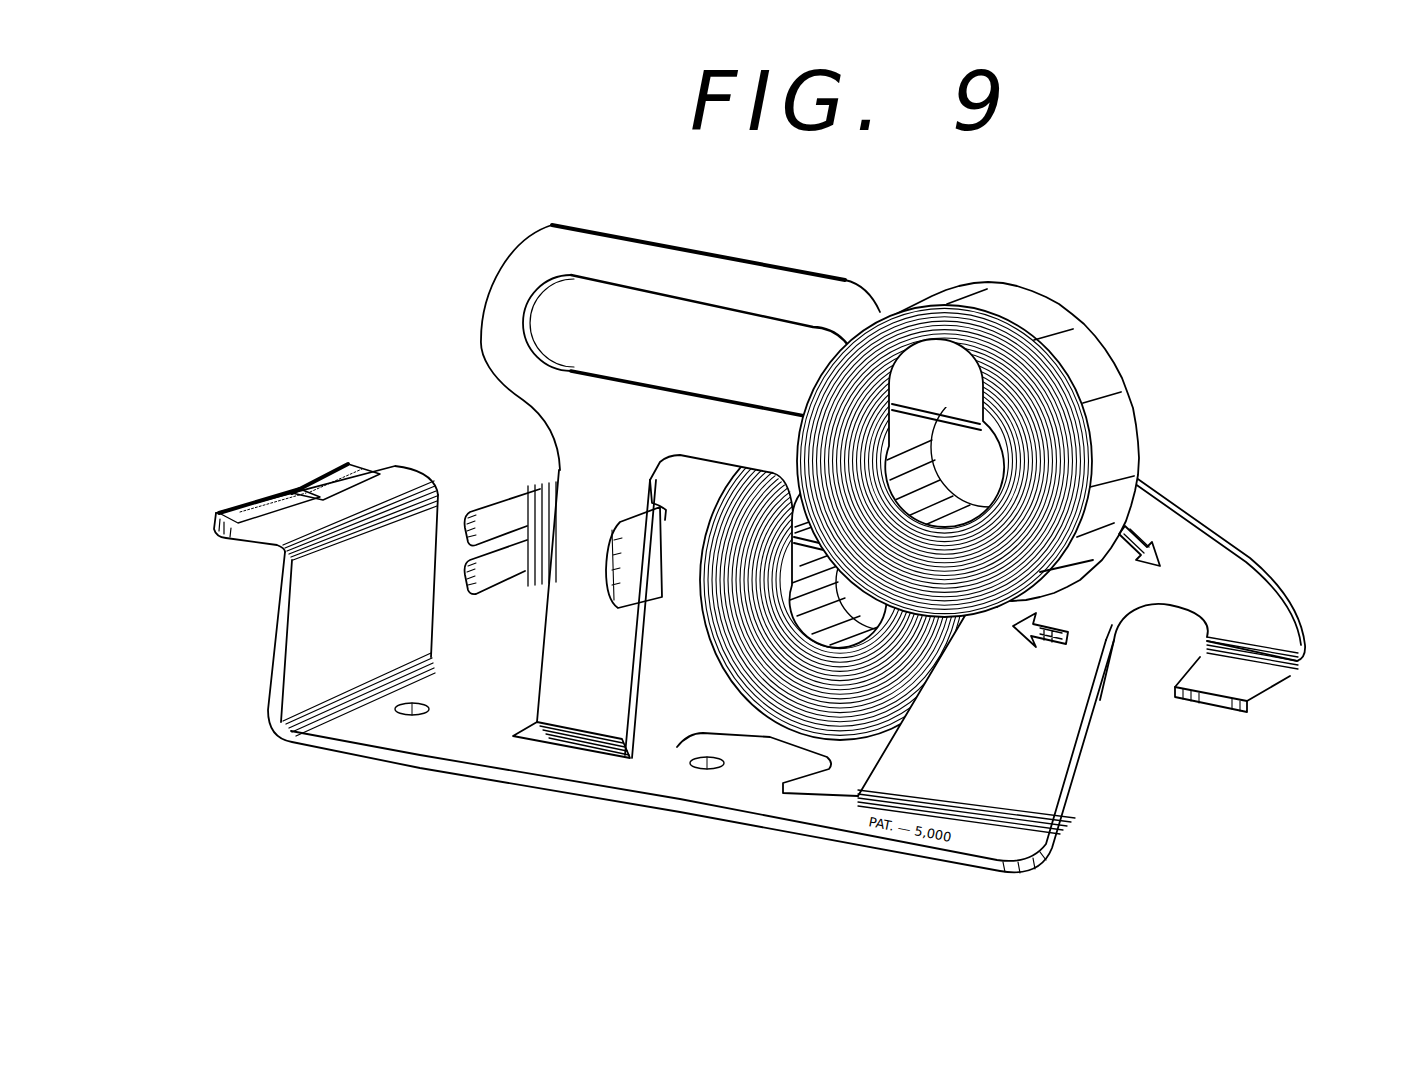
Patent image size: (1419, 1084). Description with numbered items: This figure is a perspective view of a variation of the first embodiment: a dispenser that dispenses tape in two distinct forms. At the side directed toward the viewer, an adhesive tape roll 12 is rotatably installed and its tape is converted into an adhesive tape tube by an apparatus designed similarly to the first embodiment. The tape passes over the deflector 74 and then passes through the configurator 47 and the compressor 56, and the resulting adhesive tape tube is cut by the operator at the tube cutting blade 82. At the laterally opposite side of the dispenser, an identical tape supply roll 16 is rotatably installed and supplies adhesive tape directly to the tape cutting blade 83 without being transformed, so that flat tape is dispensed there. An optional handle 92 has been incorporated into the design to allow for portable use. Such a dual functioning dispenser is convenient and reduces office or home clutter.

The handle 92 is at (632, 300).
The compressor 56 is at (498, 523).
The tape cutting blade 83 is at (332, 468).
The tube cutting blade 82 is at (240, 506).
The adhesive tape roll 12 is at (1060, 460).
The tape supply roll 16 is at (755, 640).
The configurator 47 is at (615, 597).
The deflector 74 is at (1243, 680).